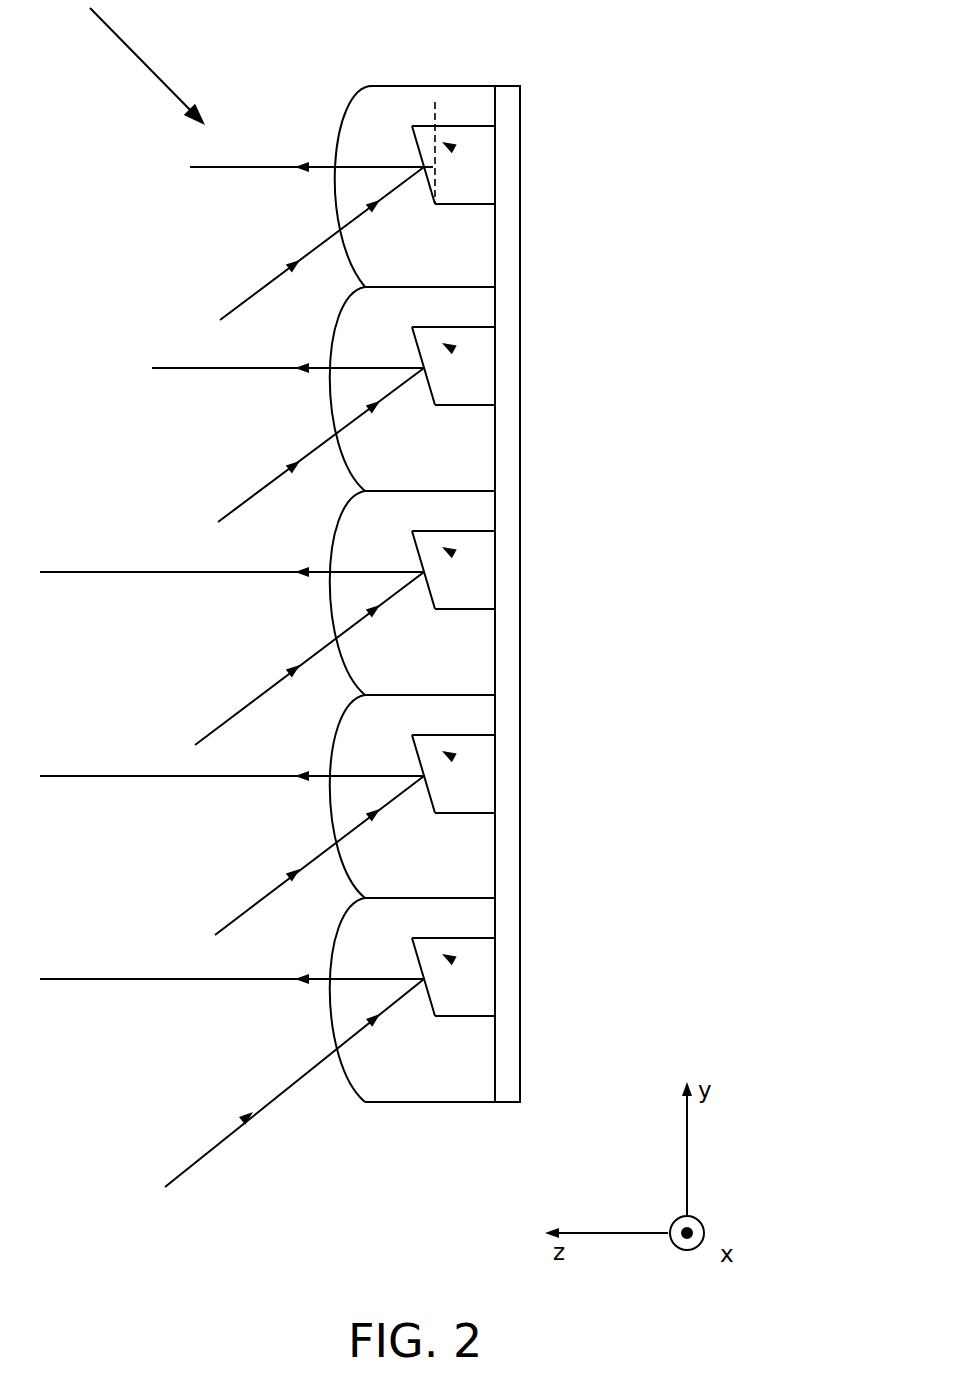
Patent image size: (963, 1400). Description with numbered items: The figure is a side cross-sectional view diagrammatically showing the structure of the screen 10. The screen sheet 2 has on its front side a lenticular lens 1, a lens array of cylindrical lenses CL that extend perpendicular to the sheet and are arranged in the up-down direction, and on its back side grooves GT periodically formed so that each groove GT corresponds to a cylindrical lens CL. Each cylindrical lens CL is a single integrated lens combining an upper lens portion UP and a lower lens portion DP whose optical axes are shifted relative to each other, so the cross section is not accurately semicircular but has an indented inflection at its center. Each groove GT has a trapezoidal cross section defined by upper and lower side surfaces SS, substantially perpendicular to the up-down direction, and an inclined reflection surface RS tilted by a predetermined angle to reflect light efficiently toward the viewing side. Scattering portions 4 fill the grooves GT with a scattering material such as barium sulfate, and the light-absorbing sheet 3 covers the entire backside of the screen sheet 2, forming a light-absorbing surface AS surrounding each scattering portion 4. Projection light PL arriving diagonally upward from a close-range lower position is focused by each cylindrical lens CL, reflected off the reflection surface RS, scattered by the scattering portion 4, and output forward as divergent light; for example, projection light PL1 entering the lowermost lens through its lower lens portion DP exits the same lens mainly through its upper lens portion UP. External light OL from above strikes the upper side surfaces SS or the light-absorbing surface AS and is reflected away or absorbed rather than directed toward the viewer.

The screen 10 is at (631, 79).
The lenticular lens 1 is at (355, 97).
The screen sheet 2 is at (445, 97).
The light-absorbing sheet 3 is at (515, 142).
The scattering portion 4 is at (475, 187).
The cylindrical lens CL is at (357, 115).
The upper lens portion UP is at (337, 133).
The center portion of lens CN is at (335, 196).
The lower lens portion DP is at (337, 248).
The side surface SS is at (467, 126).
The reflection surface RS is at (433, 204).
The light-absorbing surface AS is at (495, 255).
The groove GT is at (453, 148).
The external light OL is at (146, 38).
The projection light PL is at (208, 303).
The projection light PL1 is at (203, 1156).